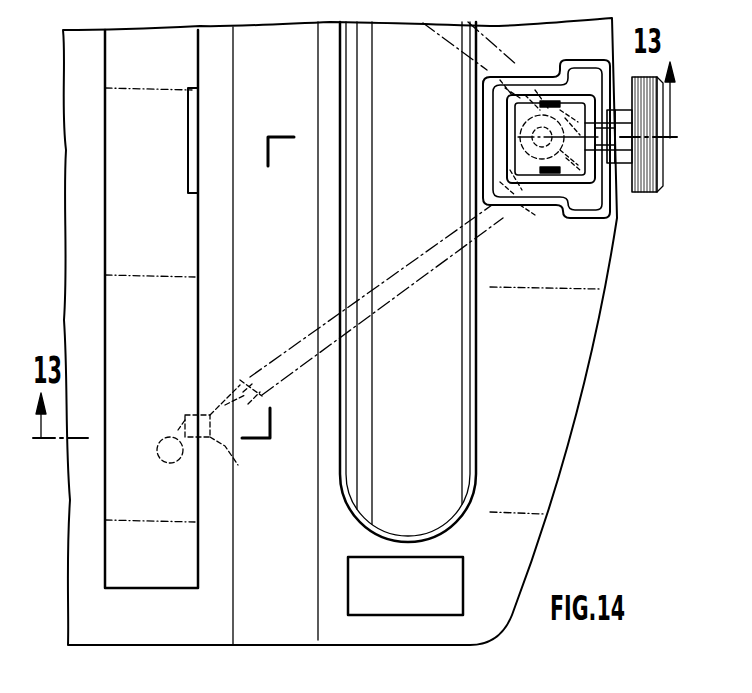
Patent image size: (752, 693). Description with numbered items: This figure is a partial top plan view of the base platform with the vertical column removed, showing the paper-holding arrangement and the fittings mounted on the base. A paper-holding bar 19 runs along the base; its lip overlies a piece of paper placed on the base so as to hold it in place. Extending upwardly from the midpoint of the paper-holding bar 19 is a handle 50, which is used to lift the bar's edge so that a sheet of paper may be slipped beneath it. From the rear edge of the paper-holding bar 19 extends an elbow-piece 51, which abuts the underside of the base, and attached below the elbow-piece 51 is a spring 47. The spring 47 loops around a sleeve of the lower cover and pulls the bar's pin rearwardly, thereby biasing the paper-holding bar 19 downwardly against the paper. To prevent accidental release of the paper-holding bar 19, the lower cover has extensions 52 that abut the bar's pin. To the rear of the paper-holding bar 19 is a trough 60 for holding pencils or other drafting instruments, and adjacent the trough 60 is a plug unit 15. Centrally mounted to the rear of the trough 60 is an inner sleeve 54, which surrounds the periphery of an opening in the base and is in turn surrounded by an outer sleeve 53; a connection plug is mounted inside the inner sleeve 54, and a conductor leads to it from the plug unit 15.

The plug unit 15 is at (452, 572).
The paper-holding bar 19 is at (148, 565).
The spring 47 is at (228, 385).
The handle 50 is at (198, 152).
The elbow-piece 51 is at (236, 460).
The extensions 52 is at (160, 459).
The outer sleeve 53 is at (580, 66).
The inner sleeve 54 is at (567, 97).
The trough 60 is at (443, 452).